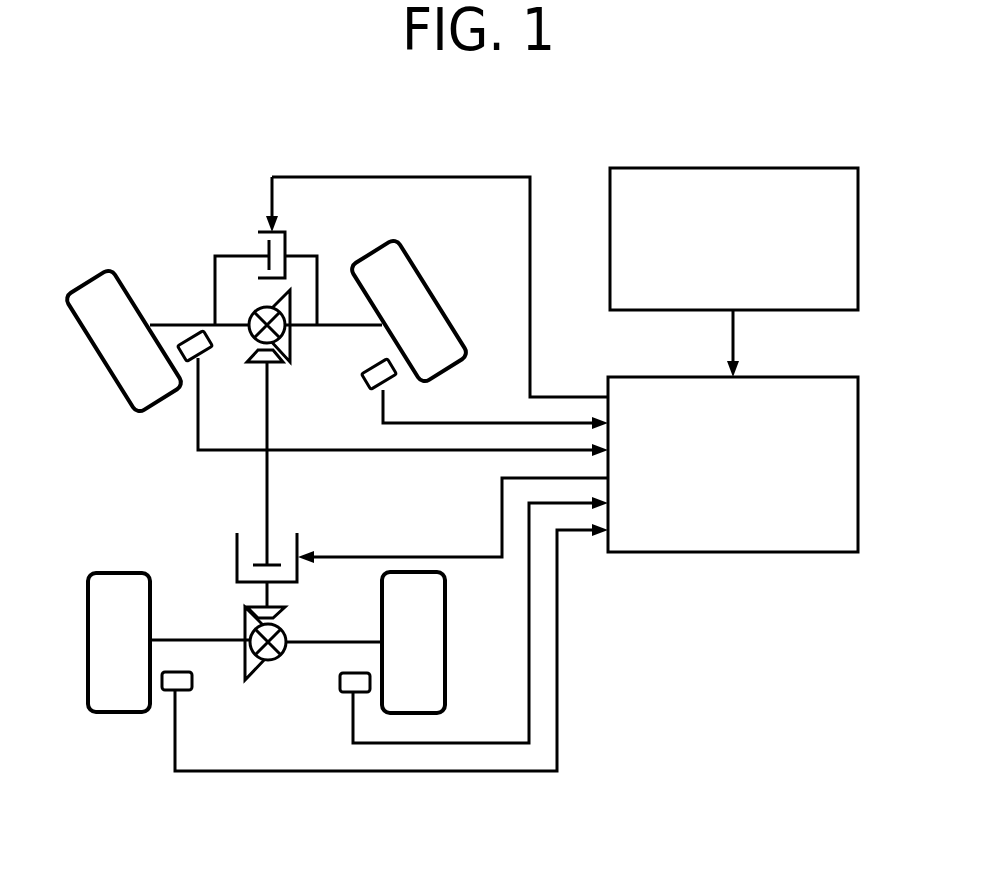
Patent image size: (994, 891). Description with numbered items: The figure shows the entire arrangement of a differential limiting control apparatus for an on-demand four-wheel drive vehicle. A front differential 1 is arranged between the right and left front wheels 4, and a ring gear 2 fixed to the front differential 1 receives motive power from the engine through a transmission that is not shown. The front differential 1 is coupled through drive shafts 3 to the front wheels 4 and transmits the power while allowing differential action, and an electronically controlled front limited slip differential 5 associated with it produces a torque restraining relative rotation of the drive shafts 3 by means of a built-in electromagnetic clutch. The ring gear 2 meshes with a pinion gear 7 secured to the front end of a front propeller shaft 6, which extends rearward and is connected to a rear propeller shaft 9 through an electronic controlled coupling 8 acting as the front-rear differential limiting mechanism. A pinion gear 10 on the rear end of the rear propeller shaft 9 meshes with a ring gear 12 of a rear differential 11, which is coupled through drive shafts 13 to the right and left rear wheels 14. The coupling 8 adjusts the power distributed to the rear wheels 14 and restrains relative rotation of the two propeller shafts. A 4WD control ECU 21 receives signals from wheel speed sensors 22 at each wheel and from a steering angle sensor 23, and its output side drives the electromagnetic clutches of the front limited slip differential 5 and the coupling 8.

The front differential 1 is at (260, 308).
The ring gear 2 is at (293, 343).
The drive shafts 3 is at (168, 325).
The front wheels 4 is at (97, 333).
The front limited slip differential 5 is at (288, 238).
The front propeller shaft 6 is at (270, 481).
The pinion gear 7 is at (275, 364).
The electronic controlled coupling 8 is at (236, 545).
The rear propeller shaft 9 is at (257, 594).
The pinion gear 10 is at (285, 612).
The rear differential 11 is at (273, 660).
The ring gear 12 is at (248, 672).
The drive shafts 13 is at (178, 638).
The rear wheels 14 is at (98, 608).
The 4WD control ECU 21 is at (858, 385).
The wheel speed sensors 22 is at (204, 356).
The steering angle sensor 23 is at (858, 180).